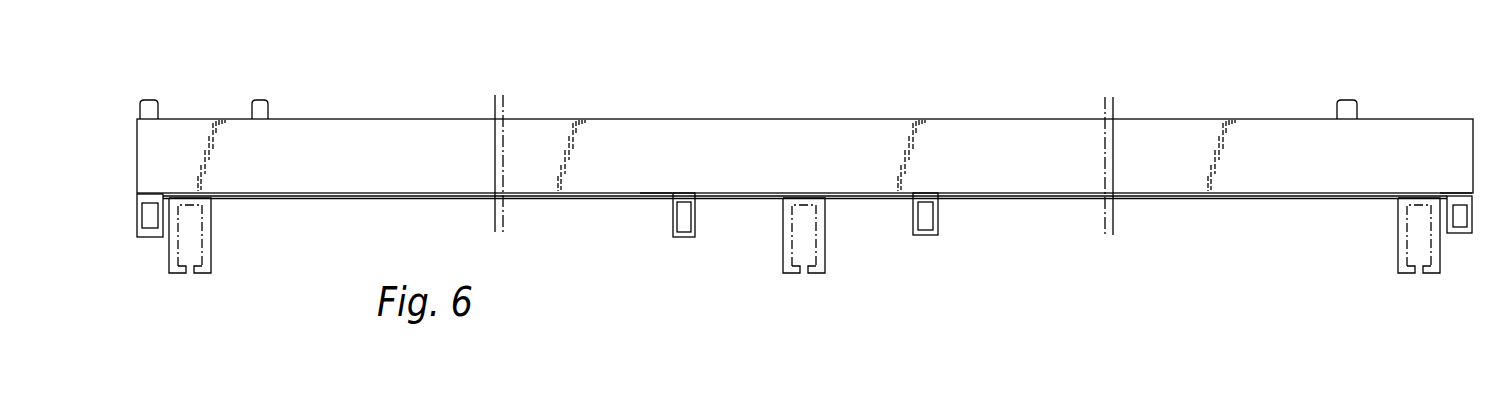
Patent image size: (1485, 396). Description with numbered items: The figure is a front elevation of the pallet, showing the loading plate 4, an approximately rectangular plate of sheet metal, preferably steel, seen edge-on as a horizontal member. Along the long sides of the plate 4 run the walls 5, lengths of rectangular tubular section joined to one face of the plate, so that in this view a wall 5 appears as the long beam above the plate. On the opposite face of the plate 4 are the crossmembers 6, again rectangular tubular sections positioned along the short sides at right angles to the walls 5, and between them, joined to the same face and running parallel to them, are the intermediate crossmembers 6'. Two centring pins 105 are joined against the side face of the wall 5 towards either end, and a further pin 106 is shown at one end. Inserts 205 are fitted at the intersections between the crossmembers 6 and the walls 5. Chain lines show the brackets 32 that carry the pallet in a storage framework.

The loading plate 4 is at (295, 198).
The wall 5 is at (999, 125).
The crossmember 6 is at (801, 244).
The intermediate crossmember 6' is at (835, 236).
The bracket 32 is at (212, 263).
The centring pin 105 is at (268, 113).
The pin 106 is at (158, 111).
The insert 205 is at (663, 195).